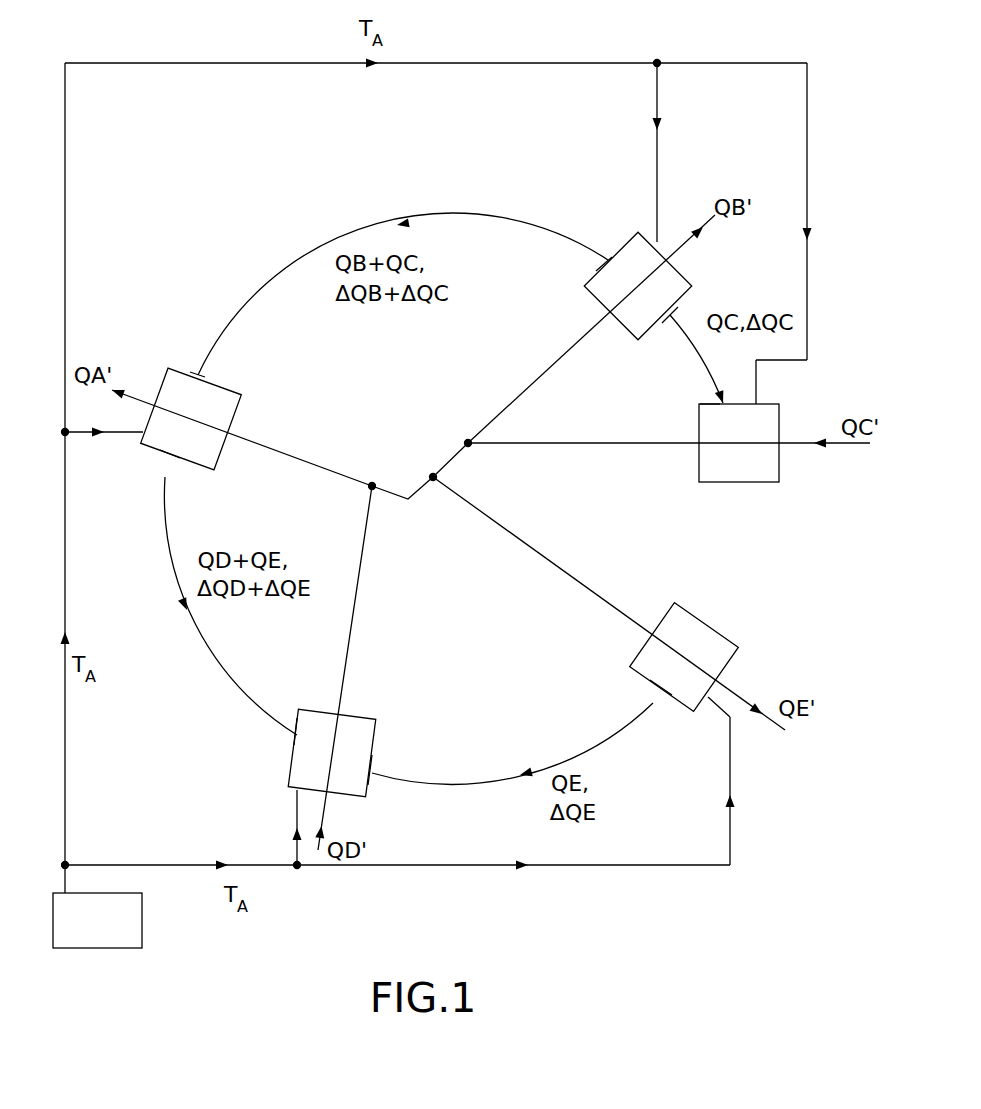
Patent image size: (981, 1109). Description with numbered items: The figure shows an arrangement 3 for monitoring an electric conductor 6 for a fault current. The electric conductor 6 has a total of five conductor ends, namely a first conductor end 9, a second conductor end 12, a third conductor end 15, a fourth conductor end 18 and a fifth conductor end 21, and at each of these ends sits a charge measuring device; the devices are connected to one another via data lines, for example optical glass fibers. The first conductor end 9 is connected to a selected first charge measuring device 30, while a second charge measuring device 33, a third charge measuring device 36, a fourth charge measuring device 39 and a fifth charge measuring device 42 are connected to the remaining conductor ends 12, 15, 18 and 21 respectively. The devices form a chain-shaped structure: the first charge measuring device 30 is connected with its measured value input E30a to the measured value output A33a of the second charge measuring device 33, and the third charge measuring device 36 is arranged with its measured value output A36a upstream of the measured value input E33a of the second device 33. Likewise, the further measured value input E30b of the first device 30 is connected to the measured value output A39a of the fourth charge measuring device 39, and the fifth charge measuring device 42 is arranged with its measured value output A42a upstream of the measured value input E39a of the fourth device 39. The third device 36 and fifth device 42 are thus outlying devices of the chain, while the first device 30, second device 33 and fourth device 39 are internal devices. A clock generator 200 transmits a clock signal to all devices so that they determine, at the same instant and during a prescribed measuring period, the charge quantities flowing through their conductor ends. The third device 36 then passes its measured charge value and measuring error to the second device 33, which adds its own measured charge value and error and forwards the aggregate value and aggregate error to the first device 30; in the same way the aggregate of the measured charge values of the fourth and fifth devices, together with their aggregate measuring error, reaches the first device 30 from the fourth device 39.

The arrangement 3 is at (248, 265).
The electric conductor 6 is at (422, 487).
The first conductor end 9 is at (140, 401).
The second conductor end 12 is at (674, 262).
The third conductor end 15 is at (791, 440).
The fourth conductor end 18 is at (325, 807).
The fifth conductor end 21 is at (728, 688).
The first charge measuring device 30 is at (156, 449).
The second charge measuring device 33 is at (619, 253).
The third charge measuring device 36 is at (745, 482).
The fourth charge measuring device 39 is at (292, 760).
The fifth charge measuring device 42 is at (707, 626).
The clock generator 200 is at (78, 932).
The measured value input E30a is at (199, 374).
The further measured value input E30b is at (170, 454).
The measured value output A33a is at (590, 258).
The measured value input E33a is at (672, 316).
The measured value output A36a is at (708, 403).
The measured value output A39a is at (295, 735).
The measured value input E39a is at (369, 772).
The measured value output A42a is at (665, 692).